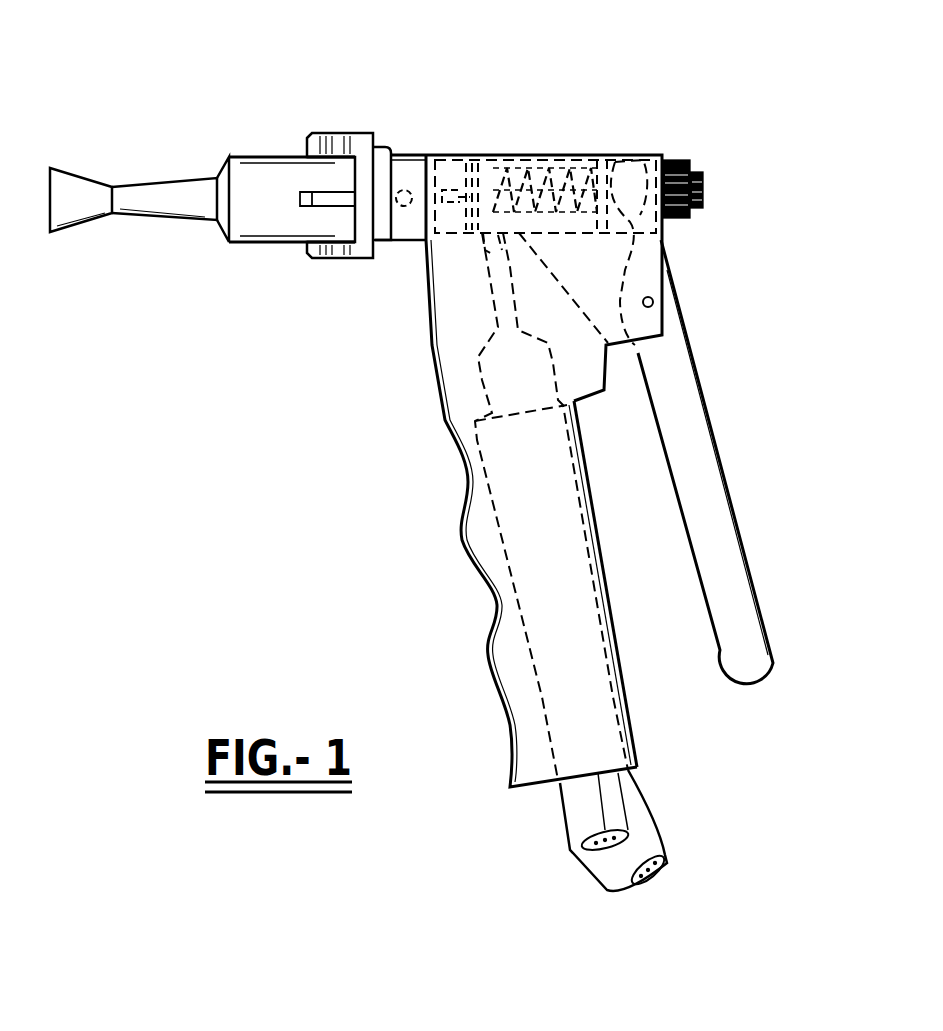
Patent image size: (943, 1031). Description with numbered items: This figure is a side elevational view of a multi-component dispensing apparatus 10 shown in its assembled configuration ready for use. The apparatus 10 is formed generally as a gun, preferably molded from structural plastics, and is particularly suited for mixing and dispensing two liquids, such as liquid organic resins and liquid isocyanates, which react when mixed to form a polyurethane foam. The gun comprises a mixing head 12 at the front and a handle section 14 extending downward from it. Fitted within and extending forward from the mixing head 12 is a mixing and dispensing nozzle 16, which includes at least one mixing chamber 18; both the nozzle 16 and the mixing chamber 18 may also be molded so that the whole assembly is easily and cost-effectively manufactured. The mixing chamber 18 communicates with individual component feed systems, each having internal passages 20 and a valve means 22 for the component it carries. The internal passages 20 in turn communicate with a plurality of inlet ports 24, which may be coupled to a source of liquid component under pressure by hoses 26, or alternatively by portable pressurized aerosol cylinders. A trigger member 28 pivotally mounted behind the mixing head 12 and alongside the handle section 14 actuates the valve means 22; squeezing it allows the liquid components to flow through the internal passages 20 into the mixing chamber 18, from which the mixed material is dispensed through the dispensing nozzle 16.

The multi-component dispensing apparatus 10 is at (292, 106).
The mixing head 12 is at (512, 152).
The handle section 14 is at (461, 483).
The mixing and dispensing nozzle 16 is at (185, 174).
The mixing chamber 18 is at (404, 190).
The internal passages 20 is at (466, 153).
The valve means 22 is at (522, 153).
The inlet ports 24 is at (497, 273).
The hoses 26 is at (647, 818).
The trigger member 28 is at (714, 425).